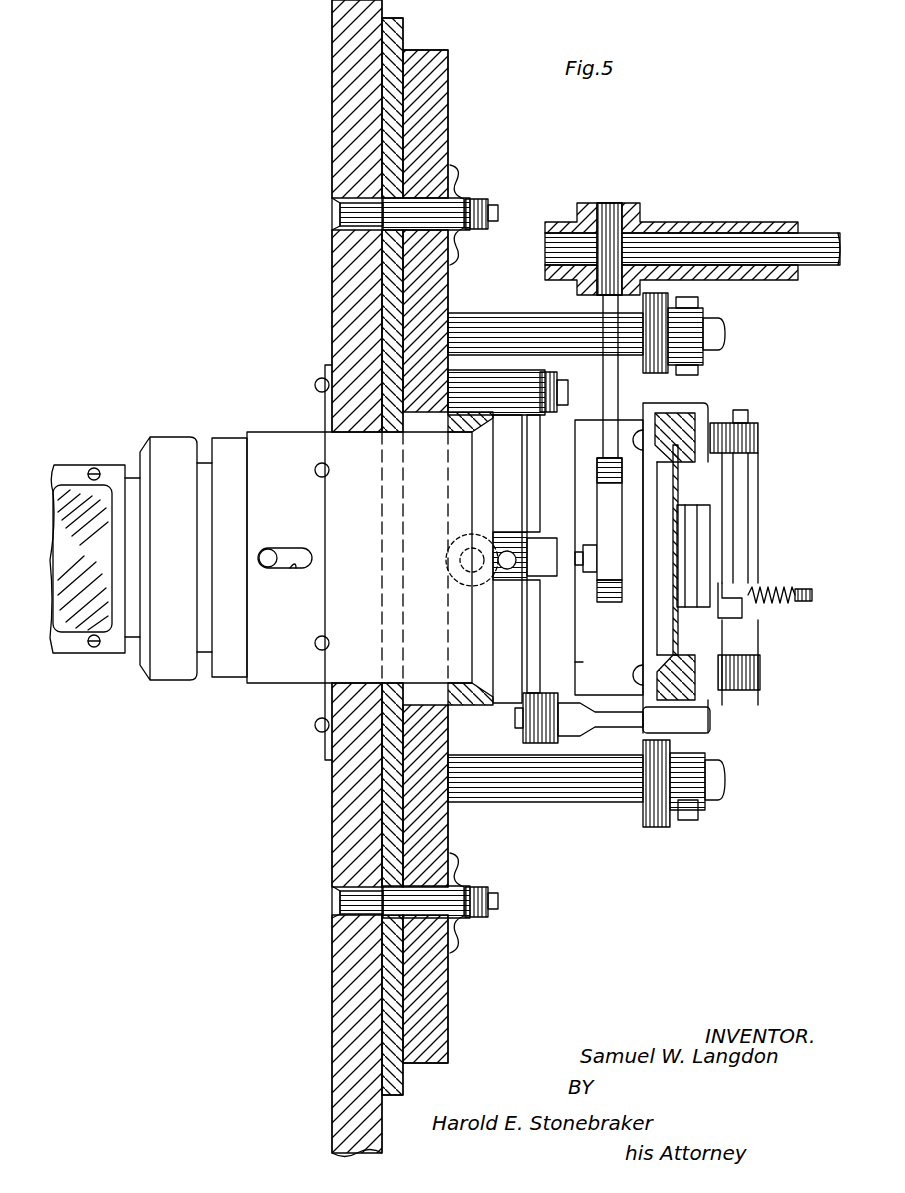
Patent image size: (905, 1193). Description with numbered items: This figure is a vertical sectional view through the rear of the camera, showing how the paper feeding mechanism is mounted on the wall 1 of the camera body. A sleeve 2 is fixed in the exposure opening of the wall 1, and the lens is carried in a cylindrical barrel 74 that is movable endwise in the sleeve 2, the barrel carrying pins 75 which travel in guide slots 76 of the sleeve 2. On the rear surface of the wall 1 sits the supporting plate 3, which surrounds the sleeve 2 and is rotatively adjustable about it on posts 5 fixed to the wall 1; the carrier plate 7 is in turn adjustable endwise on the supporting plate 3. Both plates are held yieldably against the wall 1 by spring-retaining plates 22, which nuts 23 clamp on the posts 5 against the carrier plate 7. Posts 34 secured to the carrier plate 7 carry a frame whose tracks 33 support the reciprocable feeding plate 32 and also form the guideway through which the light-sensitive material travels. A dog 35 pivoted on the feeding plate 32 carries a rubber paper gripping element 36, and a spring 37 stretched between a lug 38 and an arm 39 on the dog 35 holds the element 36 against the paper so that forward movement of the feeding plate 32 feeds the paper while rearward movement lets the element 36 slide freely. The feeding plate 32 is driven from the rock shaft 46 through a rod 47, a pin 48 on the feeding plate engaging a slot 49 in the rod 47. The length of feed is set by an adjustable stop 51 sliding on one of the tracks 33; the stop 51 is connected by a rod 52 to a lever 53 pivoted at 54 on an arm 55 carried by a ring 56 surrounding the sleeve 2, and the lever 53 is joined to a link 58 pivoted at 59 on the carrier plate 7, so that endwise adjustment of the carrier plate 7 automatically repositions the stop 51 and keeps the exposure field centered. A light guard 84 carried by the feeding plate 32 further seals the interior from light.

The wall 1 is at (343, 47).
The supporting plate 3 is at (400, 38).
The carrier plate 7 is at (446, 112).
The post 5 is at (458, 230).
The spring-retaining plate 22 is at (466, 192).
The nut 23 is at (488, 205).
The sleeve 2 is at (372, 562).
The cylindrical barrel 74 is at (228, 447).
The pin 75 is at (268, 550).
The guide slot 76 is at (290, 568).
The pivot 59 is at (460, 428).
The ring 56 is at (480, 428).
The link 58 is at (560, 380).
The lever 53 is at (536, 462).
The arm 55 is at (506, 552).
The pivot 54 is at (535, 548).
The rod 52 is at (548, 696).
The adjustable stop 51 is at (700, 725).
The post 34 is at (718, 333).
The rock shaft 46 is at (805, 236).
The rod 47 is at (600, 306).
The pin 48 is at (585, 580).
The slot 49 is at (605, 485).
The paper gripping element 36 is at (680, 582).
The track 33 is at (686, 420).
The feeding plate 32 is at (662, 615).
The dog 35 is at (702, 512).
The spring 37 is at (770, 592).
The arm 39 is at (805, 590).
The lug 38 is at (755, 615).
The light guard 84 is at (583, 664).